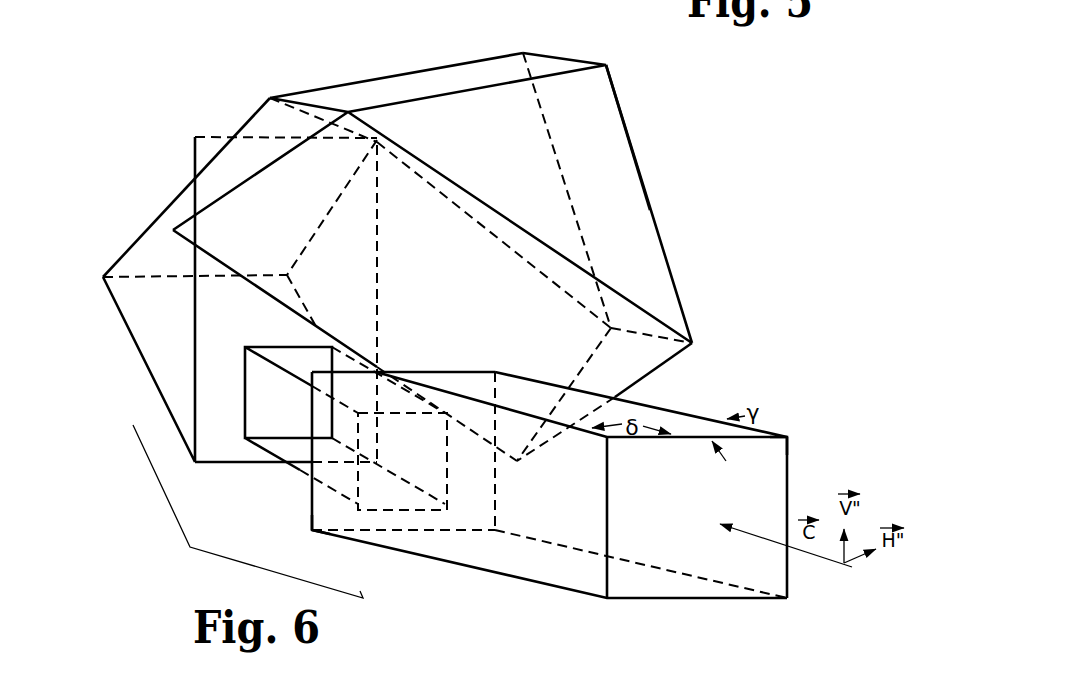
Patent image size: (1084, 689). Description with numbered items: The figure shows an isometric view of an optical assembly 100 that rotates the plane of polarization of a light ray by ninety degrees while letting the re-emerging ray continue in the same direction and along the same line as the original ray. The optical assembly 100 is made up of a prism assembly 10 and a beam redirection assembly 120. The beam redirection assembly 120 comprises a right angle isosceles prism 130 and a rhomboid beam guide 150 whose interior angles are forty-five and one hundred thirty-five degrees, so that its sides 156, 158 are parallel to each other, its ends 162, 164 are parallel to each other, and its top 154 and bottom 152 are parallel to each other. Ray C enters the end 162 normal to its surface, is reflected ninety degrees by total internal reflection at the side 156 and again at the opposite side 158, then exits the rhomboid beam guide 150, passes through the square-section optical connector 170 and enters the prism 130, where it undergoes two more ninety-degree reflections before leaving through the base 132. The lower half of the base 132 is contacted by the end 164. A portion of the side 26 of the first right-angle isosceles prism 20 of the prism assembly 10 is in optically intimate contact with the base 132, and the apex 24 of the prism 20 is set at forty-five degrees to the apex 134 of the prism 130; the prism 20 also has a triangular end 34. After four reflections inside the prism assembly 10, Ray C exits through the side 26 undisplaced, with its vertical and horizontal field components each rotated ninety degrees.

The prism assembly 10 is at (513, 52).
The first right-angle isosceles prism 20 is at (689, 353).
The apex 24 is at (268, 97).
The rectangular side 26 is at (530, 330).
The right-angle isosceles triangle end 34 is at (267, 125).
The optical assembly 100 is at (672, 146).
The beam redirection assembly 120 is at (248, 511).
The right angle isosceles prism 130 is at (143, 364).
The base 132 is at (212, 445).
The apex 134 is at (285, 277).
The rhomboid beam guide 150 is at (425, 558).
The bottom 152 is at (561, 582).
The top 154 is at (672, 419).
The side 156 is at (752, 507).
The side 158 is at (568, 517).
The end 162 is at (753, 465).
The end 164 is at (320, 535).
The optical connector 170 is at (293, 468).